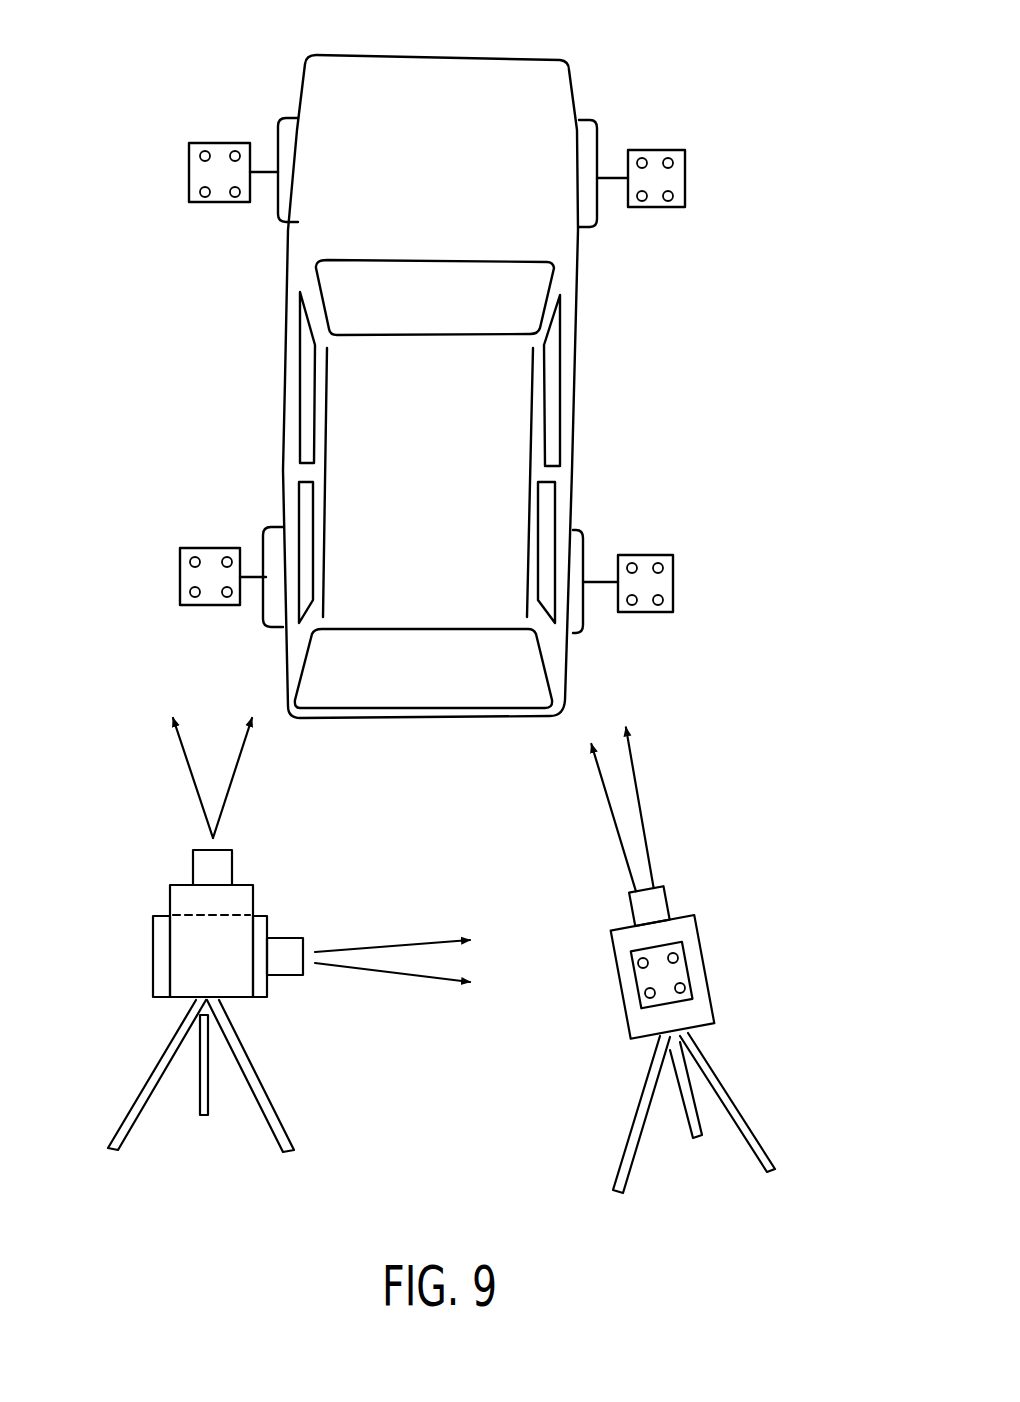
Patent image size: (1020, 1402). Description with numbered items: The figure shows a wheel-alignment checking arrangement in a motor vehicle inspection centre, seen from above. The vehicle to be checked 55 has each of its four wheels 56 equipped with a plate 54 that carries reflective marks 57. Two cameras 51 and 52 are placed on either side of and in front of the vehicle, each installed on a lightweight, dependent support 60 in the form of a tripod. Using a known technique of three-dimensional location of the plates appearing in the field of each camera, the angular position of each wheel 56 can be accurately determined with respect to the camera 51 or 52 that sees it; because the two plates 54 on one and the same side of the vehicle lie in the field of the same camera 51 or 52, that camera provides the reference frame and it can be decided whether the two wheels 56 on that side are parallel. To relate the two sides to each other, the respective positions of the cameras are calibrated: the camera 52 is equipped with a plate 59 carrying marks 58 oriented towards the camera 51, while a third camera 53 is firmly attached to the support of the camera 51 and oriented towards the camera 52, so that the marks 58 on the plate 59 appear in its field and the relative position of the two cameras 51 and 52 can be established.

The camera 51 is at (163, 905).
The camera 52 is at (718, 1006).
The third camera 53 is at (272, 992).
The plate 54 is at (184, 148).
The vehicle to be checked 55 is at (272, 388).
The wheel 56 is at (284, 124).
The reflective marks 57 is at (236, 158).
The marks 58 is at (682, 988).
The plate 59 is at (627, 990).
The support 60 is at (196, 1118).